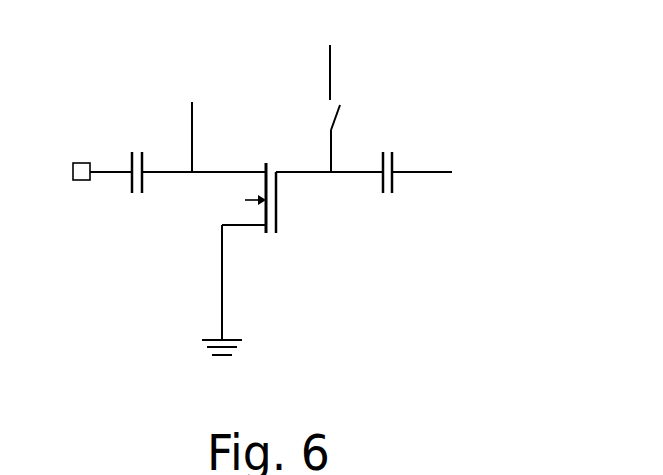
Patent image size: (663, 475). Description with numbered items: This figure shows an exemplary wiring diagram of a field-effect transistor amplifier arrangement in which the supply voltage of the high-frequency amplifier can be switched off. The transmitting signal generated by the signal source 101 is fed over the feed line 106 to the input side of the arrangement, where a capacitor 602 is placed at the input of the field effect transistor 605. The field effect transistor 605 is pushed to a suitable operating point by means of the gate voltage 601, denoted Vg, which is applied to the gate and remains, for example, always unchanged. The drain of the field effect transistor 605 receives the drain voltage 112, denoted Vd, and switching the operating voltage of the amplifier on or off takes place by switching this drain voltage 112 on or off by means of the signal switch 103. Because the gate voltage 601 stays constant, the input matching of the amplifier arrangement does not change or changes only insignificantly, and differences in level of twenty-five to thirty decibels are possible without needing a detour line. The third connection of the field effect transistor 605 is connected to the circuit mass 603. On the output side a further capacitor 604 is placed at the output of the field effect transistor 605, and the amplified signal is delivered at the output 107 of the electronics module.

The signal source 101 is at (82, 163).
The feed line 106 is at (100, 177).
The capacitor 602 is at (143, 190).
The gate voltage 601 is at (192, 112).
The field effect transistor 605 is at (277, 215).
The circuit mass 603 is at (222, 310).
The drain voltage 112 is at (329, 72).
The signal switch 103 is at (336, 117).
The capacitor 604 is at (393, 157).
The output 107 is at (415, 175).